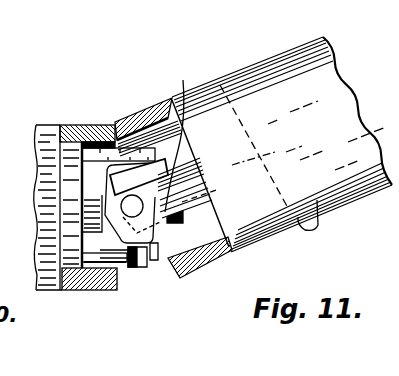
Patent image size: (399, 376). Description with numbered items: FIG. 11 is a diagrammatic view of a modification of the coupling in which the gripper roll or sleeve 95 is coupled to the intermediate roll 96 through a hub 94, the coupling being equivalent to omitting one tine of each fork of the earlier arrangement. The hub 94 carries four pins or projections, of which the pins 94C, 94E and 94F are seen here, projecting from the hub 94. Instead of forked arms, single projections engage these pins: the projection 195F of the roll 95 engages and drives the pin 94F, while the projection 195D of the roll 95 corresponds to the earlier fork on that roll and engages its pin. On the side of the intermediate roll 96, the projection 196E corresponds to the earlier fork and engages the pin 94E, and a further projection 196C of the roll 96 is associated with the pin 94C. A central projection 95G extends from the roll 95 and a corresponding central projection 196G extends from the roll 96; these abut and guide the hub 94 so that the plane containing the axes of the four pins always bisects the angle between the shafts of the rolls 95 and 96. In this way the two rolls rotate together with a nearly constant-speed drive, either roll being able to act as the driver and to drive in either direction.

The gripper roll or sleeve 95 is at (283, 62).
The projection 195F is at (196, 114).
The intermediate roll 96 is at (47, 125).
The projection 196E is at (96, 115).
The fitting flange 196C is at (107, 262).
The fitting bore 196G is at (92, 218).
The pin or projection 94E is at (130, 121).
The pin or projection 94F is at (128, 204).
The hub 94 is at (153, 234).
The pin or projection 94C is at (142, 248).
The central projection 95G is at (175, 206).
The projection 195D is at (235, 146).